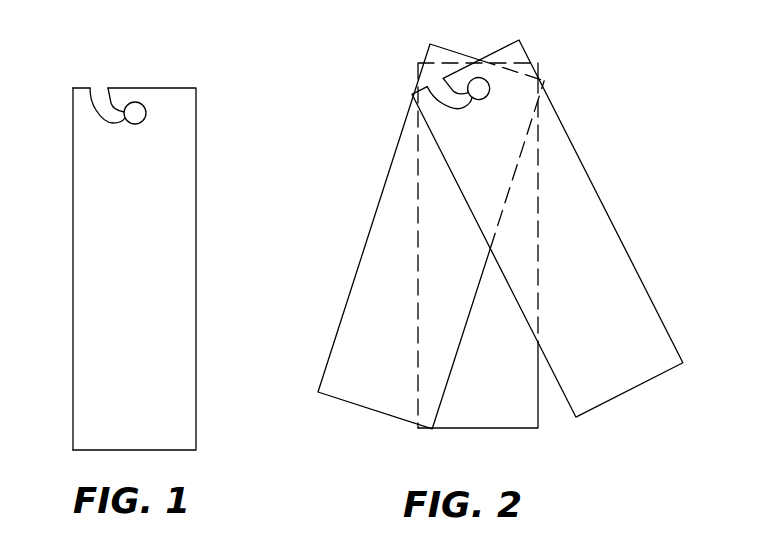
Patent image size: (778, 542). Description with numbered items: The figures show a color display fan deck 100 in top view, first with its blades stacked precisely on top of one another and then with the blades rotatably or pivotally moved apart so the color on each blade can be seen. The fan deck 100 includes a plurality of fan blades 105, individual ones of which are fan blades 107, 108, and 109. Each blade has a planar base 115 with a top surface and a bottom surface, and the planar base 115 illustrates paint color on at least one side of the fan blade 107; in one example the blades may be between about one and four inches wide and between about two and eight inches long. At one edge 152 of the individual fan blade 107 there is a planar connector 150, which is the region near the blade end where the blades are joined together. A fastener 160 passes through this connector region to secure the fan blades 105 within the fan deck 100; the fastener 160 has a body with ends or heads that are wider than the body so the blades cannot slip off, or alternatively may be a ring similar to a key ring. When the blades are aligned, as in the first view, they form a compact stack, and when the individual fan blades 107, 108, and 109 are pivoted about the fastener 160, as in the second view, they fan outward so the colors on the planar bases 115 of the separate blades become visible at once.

In FIG. 1, the color display fan deck 100 is at (145, 237).
In FIG. 2, the color display fan deck 100 is at (502, 240).
In FIG. 1, the fan blades 105 is at (203, 290).
In FIG. 2, the fan blades 105 is at (418, 438).
In FIG. 2, the fan blade 107 is at (672, 340).
In FIG. 2, the fan blade 108 is at (508, 428).
In FIG. 2, the fan blade 109 is at (337, 402).
In FIG. 1, the planar base 115 is at (92, 352).
In FIG. 1, the planar connector 150 is at (107, 74).
In FIG. 1, the edge 152 is at (115, 107).
In FIG. 1, the fastener 160 is at (152, 108).
In FIG. 2, the fastener 160 is at (494, 82).